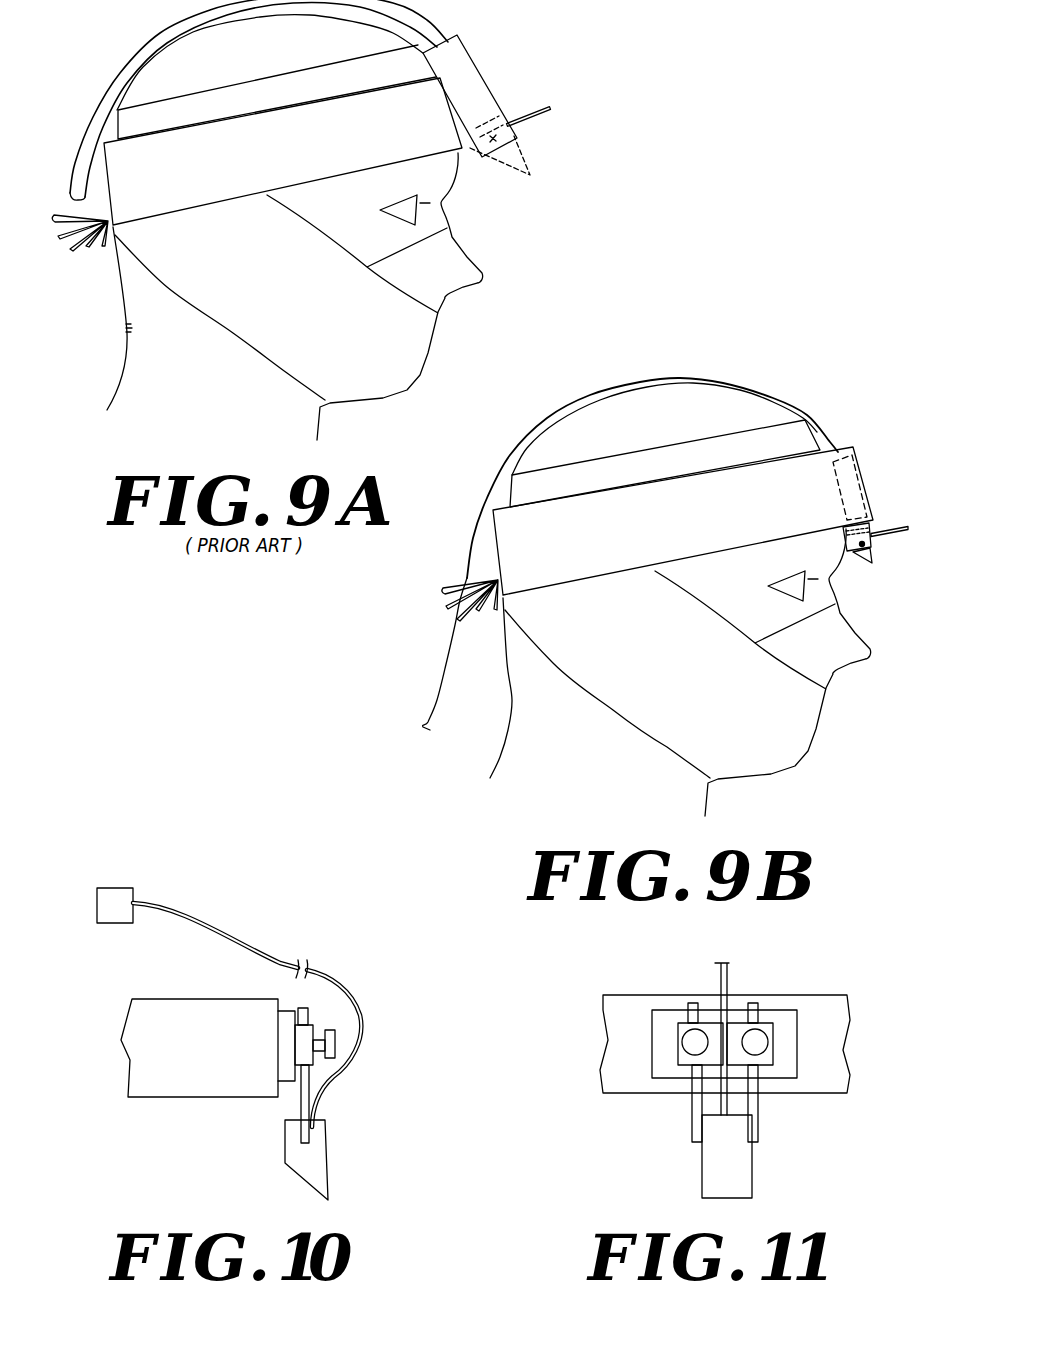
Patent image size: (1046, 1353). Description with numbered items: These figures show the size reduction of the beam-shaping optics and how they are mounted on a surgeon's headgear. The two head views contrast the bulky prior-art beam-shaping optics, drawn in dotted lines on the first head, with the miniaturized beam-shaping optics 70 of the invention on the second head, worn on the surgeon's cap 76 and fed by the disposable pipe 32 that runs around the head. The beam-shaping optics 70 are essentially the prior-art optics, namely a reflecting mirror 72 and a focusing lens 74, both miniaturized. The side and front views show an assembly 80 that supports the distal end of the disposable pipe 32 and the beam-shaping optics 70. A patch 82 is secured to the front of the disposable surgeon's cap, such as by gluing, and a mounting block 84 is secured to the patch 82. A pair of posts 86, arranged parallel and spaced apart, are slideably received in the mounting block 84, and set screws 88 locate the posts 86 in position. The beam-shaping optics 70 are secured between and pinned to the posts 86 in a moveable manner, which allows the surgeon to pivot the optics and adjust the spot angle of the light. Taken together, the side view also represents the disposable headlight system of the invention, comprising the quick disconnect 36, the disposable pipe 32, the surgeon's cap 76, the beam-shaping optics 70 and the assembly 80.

In FIG. 9B, the disposable pipe 32 is at (617, 388).
In FIG. 10, the disposable pipe 32 is at (337, 970).
In FIG. 11, the disposable pipe 32 is at (728, 975).
In FIG. 10, the quick disconnect 36 is at (105, 915).
In FIG. 9B, the beam-shaping optics 70 is at (876, 490).
In FIG. 10, the beam-shaping optics 70 is at (343, 1163).
In FIG. 11, the beam-shaping optics 70 is at (674, 1157).
In FIG. 9B, the reflecting mirror 72 is at (878, 527).
In FIG. 9B, the focusing lens 74 is at (873, 553).
In FIG. 9B, the surgeon's cap 76 is at (737, 502).
In FIG. 10, the assembly 80 is at (347, 1092).
In FIG. 10, the patch 82 is at (285, 1035).
In FIG. 11, the patch 82 is at (780, 1010).
In FIG. 10, the mounting block 84 is at (313, 1030).
In FIG. 11, the mounting block 84 is at (775, 1030).
In FIG. 10, the posts 86 is at (300, 1100).
In FIG. 11, the posts 86 is at (692, 1105).
In FIG. 10, the set screws 88 is at (337, 1047).
In FIG. 11, the set screws 88 is at (690, 1038).